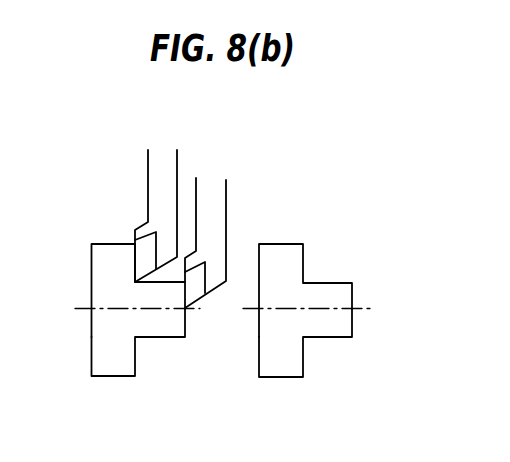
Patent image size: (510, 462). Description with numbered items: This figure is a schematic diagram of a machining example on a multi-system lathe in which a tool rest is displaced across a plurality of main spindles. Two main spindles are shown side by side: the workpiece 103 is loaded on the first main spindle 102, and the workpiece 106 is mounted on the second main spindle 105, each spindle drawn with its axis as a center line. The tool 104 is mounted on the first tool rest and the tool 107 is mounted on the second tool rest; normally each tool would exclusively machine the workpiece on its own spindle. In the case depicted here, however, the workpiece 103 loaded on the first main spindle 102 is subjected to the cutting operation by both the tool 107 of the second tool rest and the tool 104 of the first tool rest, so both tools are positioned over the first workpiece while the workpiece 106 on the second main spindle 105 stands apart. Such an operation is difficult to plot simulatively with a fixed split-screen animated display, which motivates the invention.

The first main spindle 102 is at (84, 317).
The workpiece 103 is at (104, 357).
The tool 104 is at (162, 173).
The second main spindle 105 is at (248, 316).
The workpiece 106 is at (277, 358).
The tool 107 is at (215, 188).